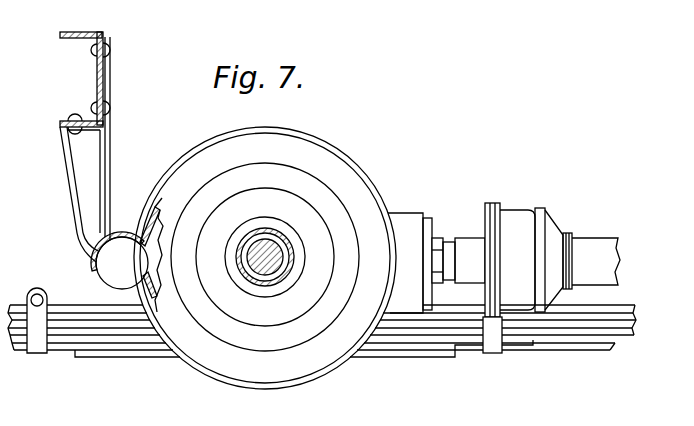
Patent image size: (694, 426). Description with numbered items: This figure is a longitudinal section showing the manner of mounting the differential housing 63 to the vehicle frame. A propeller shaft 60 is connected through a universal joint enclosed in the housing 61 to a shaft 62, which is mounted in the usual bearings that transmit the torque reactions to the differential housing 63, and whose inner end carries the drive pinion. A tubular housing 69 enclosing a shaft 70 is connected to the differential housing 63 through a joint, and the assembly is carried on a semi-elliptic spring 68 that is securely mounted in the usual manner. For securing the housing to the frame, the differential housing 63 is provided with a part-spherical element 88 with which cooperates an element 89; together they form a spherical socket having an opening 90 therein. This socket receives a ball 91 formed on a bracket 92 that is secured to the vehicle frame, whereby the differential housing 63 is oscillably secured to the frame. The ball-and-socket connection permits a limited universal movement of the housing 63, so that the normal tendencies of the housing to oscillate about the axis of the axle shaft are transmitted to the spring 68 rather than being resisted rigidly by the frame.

The propeller shaft 60 is at (592, 248).
The housing 61 is at (515, 222).
The shaft 62 is at (448, 257).
The differential housing 63 is at (342, 171).
The semi-elliptic spring 68 is at (100, 346).
The tubular housing 69 is at (292, 238).
The shaft 70 is at (268, 250).
The part-spherical element 88 is at (127, 230).
The element 89 is at (98, 283).
The opening 90 is at (100, 262).
The ball 91 is at (115, 257).
The bracket 92 is at (82, 162).